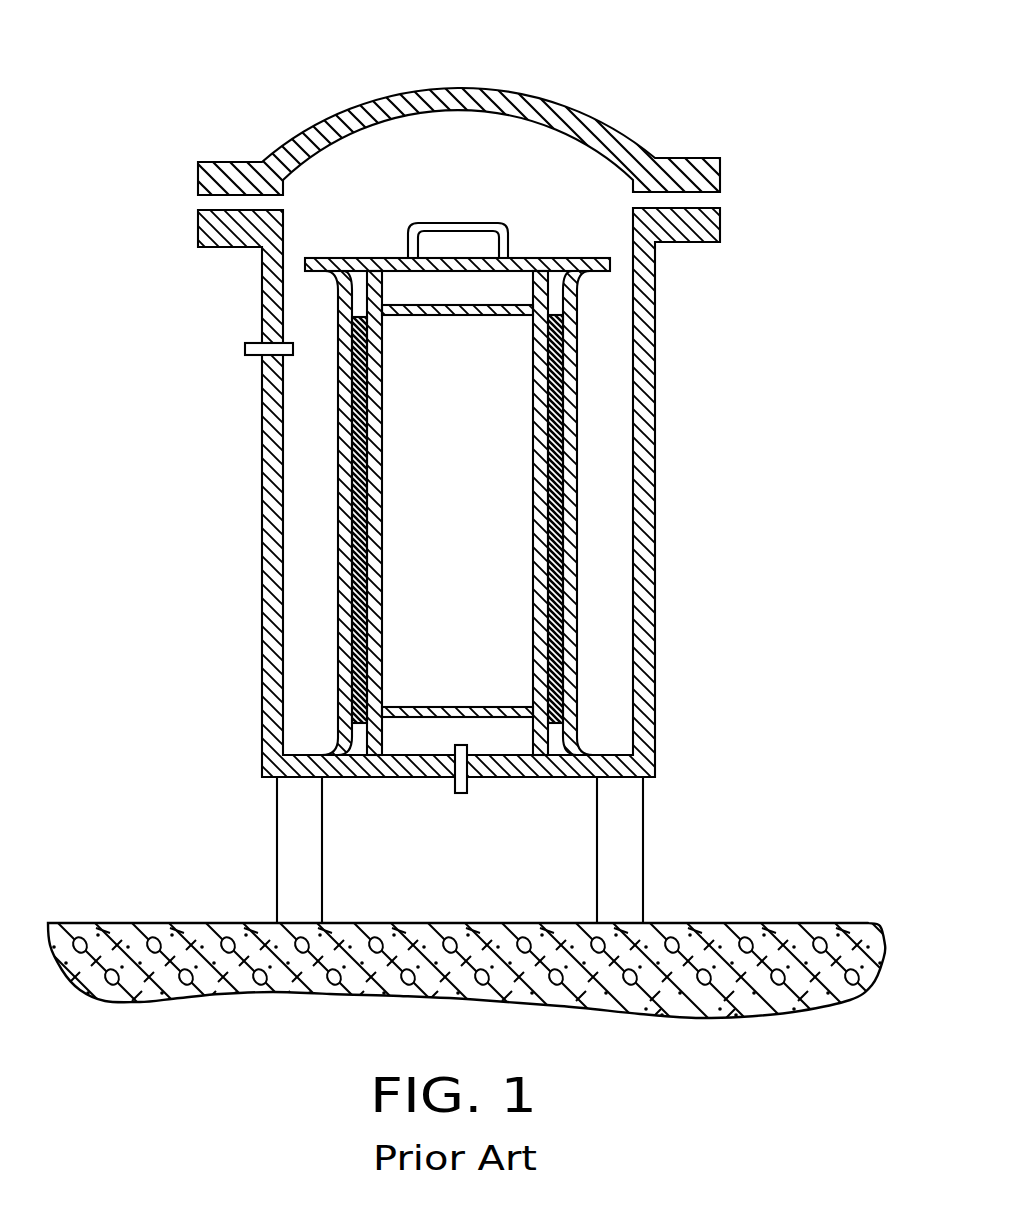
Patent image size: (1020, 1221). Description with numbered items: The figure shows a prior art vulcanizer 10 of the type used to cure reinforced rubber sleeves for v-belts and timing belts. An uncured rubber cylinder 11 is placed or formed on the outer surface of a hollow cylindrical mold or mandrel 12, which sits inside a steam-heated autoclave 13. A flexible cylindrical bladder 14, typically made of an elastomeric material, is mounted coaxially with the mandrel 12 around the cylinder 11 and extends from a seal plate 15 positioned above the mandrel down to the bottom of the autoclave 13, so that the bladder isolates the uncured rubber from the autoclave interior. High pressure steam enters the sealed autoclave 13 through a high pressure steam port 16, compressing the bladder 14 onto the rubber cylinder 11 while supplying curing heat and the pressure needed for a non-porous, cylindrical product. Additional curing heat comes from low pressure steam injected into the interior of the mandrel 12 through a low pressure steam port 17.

The vulcanizer 10 is at (303, 93).
The uncured rubber cylinder 11 is at (560, 308).
The hollow cylindrical mold or mandrel 12 is at (520, 571).
The steam-heated autoclave 13 is at (731, 222).
The flexible cylindrical bladder 14 is at (585, 421).
The seal plate 15 is at (546, 247).
The high pressure steam port 16 is at (246, 350).
The low pressure steam port 17 is at (456, 796).